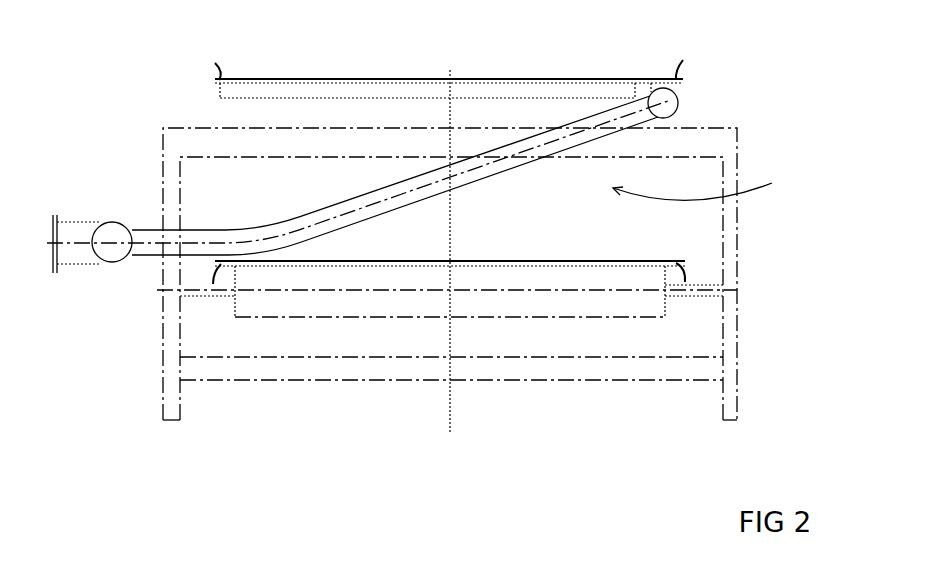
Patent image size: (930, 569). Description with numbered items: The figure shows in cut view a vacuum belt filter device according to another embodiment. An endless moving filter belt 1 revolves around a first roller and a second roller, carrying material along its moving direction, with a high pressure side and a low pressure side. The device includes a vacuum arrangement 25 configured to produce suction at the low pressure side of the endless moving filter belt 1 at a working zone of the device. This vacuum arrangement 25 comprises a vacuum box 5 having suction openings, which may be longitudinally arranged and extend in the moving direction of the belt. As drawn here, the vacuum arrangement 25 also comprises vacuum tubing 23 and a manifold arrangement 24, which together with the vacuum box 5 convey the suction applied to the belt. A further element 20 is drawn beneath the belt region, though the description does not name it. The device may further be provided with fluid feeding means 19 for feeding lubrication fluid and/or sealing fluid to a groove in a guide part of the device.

The endless moving filter belt 1 is at (572, 78).
The vacuum box 5 is at (677, 97).
The fluid feeding means 19 is at (737, 242).
The tray support region 20 is at (298, 100).
The vacuum tubing 23 is at (480, 182).
The manifold arrangement 24 is at (112, 223).
The vacuum arrangement 25 is at (705, 171).